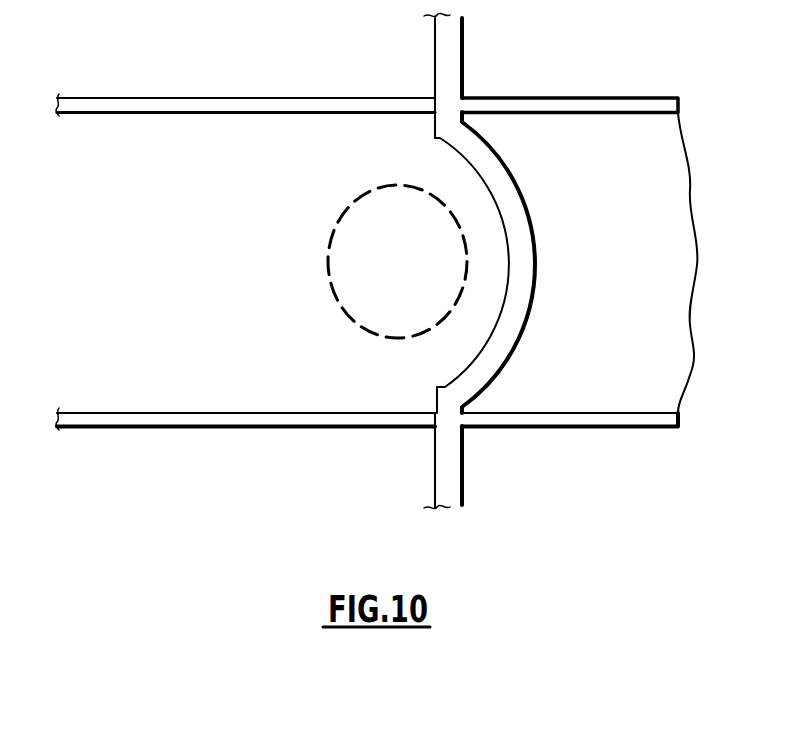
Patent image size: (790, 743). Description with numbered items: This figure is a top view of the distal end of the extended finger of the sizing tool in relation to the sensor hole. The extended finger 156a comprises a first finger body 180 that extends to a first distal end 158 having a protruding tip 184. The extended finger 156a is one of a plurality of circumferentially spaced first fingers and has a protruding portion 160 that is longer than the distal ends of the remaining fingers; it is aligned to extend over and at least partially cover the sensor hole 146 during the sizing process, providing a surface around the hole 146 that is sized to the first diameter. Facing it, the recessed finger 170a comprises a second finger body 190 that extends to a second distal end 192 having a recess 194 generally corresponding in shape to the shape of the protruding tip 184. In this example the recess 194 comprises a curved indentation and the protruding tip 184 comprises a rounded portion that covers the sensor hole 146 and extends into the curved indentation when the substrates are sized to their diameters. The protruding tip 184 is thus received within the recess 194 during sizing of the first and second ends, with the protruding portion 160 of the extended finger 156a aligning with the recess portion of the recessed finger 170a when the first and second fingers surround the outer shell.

The sensor hole 146 is at (332, 286).
The extended finger 156a is at (241, 179).
The first distal end 158 is at (435, 70).
The protruding portion 160 is at (518, 262).
The recessed finger 170a is at (597, 125).
The first finger body 180 is at (203, 392).
The protruding tip 184 is at (509, 272).
The second finger body 190 is at (640, 392).
The second distal end 192 is at (460, 405).
The recess 194 is at (522, 184).